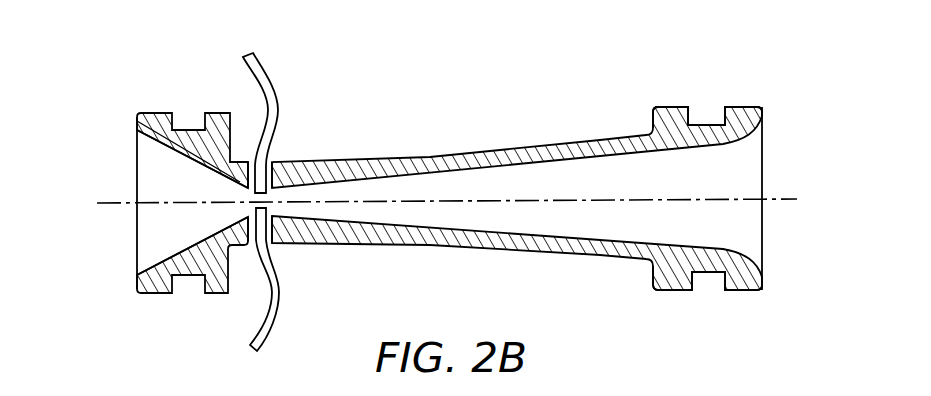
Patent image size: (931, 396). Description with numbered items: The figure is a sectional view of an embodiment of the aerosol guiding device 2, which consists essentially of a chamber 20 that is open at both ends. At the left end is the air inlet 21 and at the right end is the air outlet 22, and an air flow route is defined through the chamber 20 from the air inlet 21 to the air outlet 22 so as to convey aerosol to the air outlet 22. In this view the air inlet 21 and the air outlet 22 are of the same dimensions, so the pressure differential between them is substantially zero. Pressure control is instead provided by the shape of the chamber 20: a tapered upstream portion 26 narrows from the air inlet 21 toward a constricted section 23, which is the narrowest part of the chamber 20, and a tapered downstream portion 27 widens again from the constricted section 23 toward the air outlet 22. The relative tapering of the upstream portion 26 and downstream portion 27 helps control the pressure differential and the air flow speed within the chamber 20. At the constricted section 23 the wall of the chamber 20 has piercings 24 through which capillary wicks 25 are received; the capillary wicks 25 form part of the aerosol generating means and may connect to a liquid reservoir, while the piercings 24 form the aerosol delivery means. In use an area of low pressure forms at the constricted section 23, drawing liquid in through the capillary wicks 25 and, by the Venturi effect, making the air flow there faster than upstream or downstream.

The aerosol guiding device 2 is at (579, 85).
The chamber 20 is at (412, 154).
The air inlet 21 is at (135, 153).
The air outlet 22 is at (762, 148).
The constricted section 23 is at (266, 205).
The piercings 24 is at (270, 158).
The capillary wicks 25 is at (272, 72).
The upstream portion 26 is at (152, 237).
The downstream portion 27 is at (555, 222).